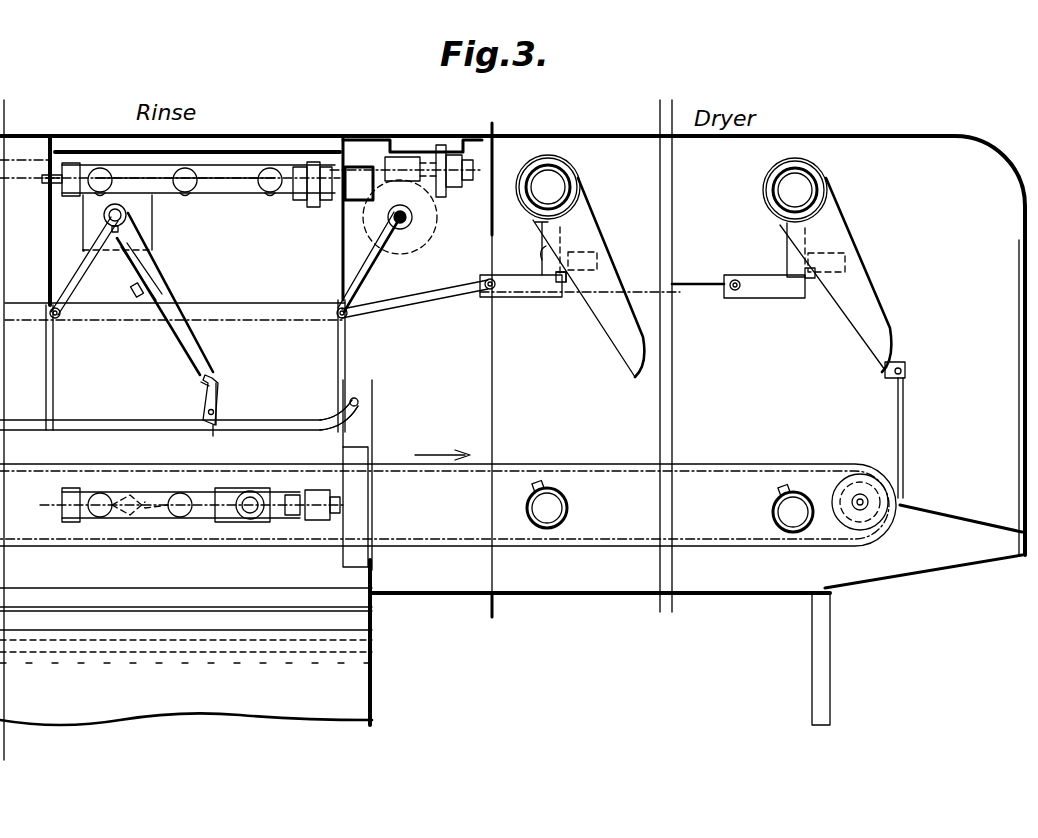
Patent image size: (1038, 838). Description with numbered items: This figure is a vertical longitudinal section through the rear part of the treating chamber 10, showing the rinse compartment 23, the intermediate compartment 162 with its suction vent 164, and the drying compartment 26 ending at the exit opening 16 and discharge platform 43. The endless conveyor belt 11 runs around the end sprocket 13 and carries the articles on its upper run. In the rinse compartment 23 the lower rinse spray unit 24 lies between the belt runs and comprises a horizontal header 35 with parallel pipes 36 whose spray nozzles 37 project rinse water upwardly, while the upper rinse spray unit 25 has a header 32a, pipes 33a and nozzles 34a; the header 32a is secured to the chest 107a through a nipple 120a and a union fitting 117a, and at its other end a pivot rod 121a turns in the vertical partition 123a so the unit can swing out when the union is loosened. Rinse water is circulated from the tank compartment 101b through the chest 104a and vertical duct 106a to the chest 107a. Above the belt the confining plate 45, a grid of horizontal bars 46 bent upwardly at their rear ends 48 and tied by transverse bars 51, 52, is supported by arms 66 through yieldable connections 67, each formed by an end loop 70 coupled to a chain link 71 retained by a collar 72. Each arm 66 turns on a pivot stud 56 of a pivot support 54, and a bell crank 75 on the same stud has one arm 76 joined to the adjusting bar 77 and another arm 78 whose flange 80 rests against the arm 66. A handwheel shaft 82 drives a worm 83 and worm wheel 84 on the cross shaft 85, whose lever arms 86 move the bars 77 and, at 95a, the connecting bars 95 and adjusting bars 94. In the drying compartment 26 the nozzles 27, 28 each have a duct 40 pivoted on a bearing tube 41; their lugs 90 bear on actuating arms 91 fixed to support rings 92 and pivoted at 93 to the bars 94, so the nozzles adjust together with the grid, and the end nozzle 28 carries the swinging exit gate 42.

The treating chamber 10 is at (272, 122).
The endless conveyor belt 11 is at (612, 473).
The end sprocket 13 is at (838, 492).
The exit opening 16 is at (1022, 350).
The rinse compartment 23 is at (79, 308).
The lower rinse spray unit 24 is at (154, 529).
The upper rinse spray unit 25 is at (242, 207).
The drying compartment 26 is at (600, 356).
The drying nozzle 27 is at (611, 362).
The end drying nozzle 28 is at (855, 358).
The header 32a is at (203, 196).
The spray pipe 33a is at (198, 178).
The spray nozzle 34a is at (271, 194).
The horizontal header 35 is at (135, 510).
The horizontal parallel pipes 36 is at (142, 500).
The spray nozzle 37 is at (185, 492).
The duct 40 is at (600, 325).
The bearing tube 41 is at (572, 172).
The swinging exit gate 42 is at (905, 455).
The discharge platform 43 is at (950, 517).
The confining plate 45 is at (120, 411).
The horizontal bars 46 is at (65, 426).
The rear ends of grid bars 48 is at (332, 413).
The end transverse bar 51 is at (358, 404).
The intermediate transverse bar 52 is at (212, 431).
The pivot support 54 is at (155, 219).
The pivot stud 56 is at (104, 215).
The arm 66 is at (163, 296).
The yieldable connection 67 is at (228, 406).
The end loop extension 70 is at (211, 378).
The chain link 71 is at (203, 395).
The collar 72 is at (207, 410).
The bell crank 75 is at (97, 306).
The bell crank arm 76 is at (72, 271).
The adjusting bar 77 is at (272, 310).
The bell crank arm 78 is at (152, 262).
The flange 80 is at (130, 292).
The shaft 82 is at (22, 158).
The worm 83 is at (402, 157).
The worm wheel 84 is at (432, 236).
The shaft 85 is at (412, 217).
The lever arm 86 is at (378, 268).
The supporting lug 90 is at (562, 284).
The actuating arm 91 is at (542, 248).
The support ring 92 is at (571, 180).
The pivotal connection 93 is at (488, 292).
The adjusting bar 94 is at (684, 282).
The connecting bar 95 is at (412, 300).
The pivot point 95a is at (338, 320).
The tank compartment 101b is at (156, 705).
The chest 104a is at (356, 520).
The vertical duct 106a is at (372, 378).
The chest 107a is at (358, 165).
The union fitting 117a is at (312, 202).
The nipple 120a is at (333, 200).
The pivot rod 121a is at (45, 180).
The vertical partition 123a is at (48, 222).
The compartment 162 is at (470, 370).
The suction vent 164 is at (424, 140).